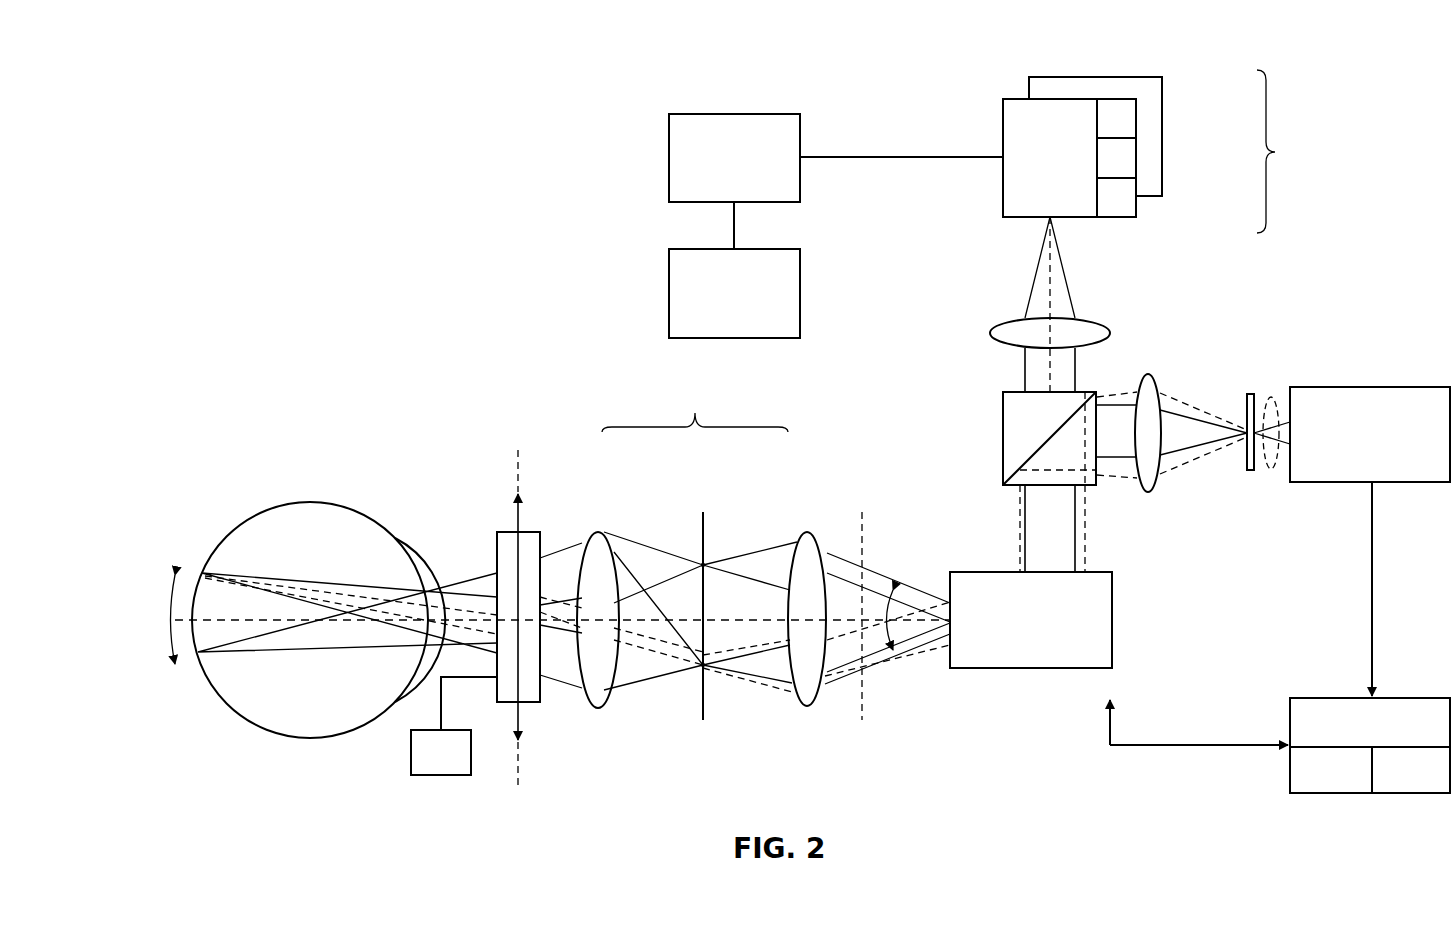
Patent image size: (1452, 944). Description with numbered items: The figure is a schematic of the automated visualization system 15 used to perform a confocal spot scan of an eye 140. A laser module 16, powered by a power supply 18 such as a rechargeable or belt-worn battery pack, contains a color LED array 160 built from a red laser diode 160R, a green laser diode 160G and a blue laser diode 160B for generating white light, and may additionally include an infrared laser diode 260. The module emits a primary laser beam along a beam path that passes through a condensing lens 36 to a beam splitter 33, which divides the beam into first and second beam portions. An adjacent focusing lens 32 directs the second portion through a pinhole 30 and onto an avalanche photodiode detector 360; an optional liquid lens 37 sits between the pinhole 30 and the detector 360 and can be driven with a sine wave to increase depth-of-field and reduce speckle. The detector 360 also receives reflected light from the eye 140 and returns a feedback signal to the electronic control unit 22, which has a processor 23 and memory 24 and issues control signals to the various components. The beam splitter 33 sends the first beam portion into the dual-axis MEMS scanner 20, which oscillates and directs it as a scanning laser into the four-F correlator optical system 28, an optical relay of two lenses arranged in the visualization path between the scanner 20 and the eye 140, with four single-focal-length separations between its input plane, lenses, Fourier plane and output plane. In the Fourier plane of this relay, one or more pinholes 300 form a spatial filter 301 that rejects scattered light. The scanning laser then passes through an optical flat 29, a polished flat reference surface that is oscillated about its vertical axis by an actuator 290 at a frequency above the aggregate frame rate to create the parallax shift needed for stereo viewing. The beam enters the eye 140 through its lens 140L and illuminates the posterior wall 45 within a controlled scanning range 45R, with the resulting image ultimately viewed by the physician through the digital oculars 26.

The automated visualization system 15 is at (1352, 278).
The laser module 16 is at (1285, 151).
The power supply 18 is at (720, 113).
The dual-axis MEMS scanner 20 is at (1112, 618).
The electronic control unit 22 is at (1398, 698).
The processor 23 is at (1344, 770).
The memory 24 is at (1412, 774).
The digital oculars 26 is at (720, 248).
The 4F correlator optical system 28 is at (786, 790).
The optical flat 29 is at (528, 703).
The pinhole 30 is at (1250, 392).
The focusing lens 32 is at (1152, 385).
The beam splitter 33 is at (1018, 392).
The condensing lens 36 is at (1090, 328).
The liquid lens 37 is at (1272, 397).
The posterior wall 45 is at (236, 527).
The controlled scanning range 45R is at (168, 610).
The eye 140 is at (204, 496).
The lens 140L is at (417, 555).
The color LED array 160 is at (1013, 99).
The red laser diode 160R is at (1137, 117).
The green laser diode 160G is at (1137, 157).
The blue laser diode 160B is at (1137, 201).
The infrared laser diode 260 is at (1095, 77).
The actuator 290 is at (454, 726).
The pinholes 300 is at (703, 565).
The spatial filter 301 is at (718, 724).
The avalanche photodiode detector 360 is at (1383, 387).